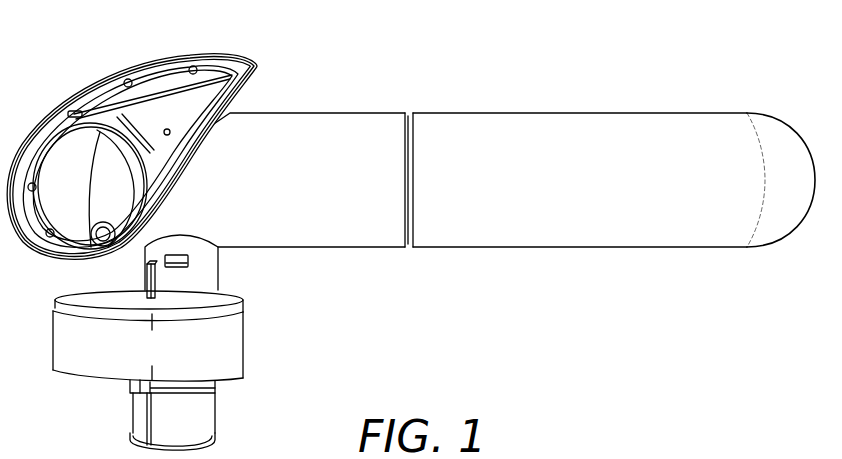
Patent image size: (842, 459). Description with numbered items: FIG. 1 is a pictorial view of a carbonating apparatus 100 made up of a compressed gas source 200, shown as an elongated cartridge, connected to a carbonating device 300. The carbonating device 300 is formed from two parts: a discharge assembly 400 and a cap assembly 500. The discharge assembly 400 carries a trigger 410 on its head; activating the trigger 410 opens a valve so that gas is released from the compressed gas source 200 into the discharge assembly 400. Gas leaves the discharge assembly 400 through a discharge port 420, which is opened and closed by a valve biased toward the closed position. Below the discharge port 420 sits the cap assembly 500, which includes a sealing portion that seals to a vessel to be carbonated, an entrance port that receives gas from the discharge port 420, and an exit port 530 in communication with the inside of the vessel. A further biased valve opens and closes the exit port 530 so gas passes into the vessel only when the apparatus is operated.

The carbonating apparatus 100 is at (412, 231).
The compressed gas source 200 is at (553, 112).
The carbonating device 300 is at (132, 134).
The discharge assembly 400 is at (314, 112).
The trigger 410 is at (80, 95).
The discharge port 420 is at (208, 268).
The cap assembly 500 is at (253, 343).
The exit port 530 is at (137, 410).